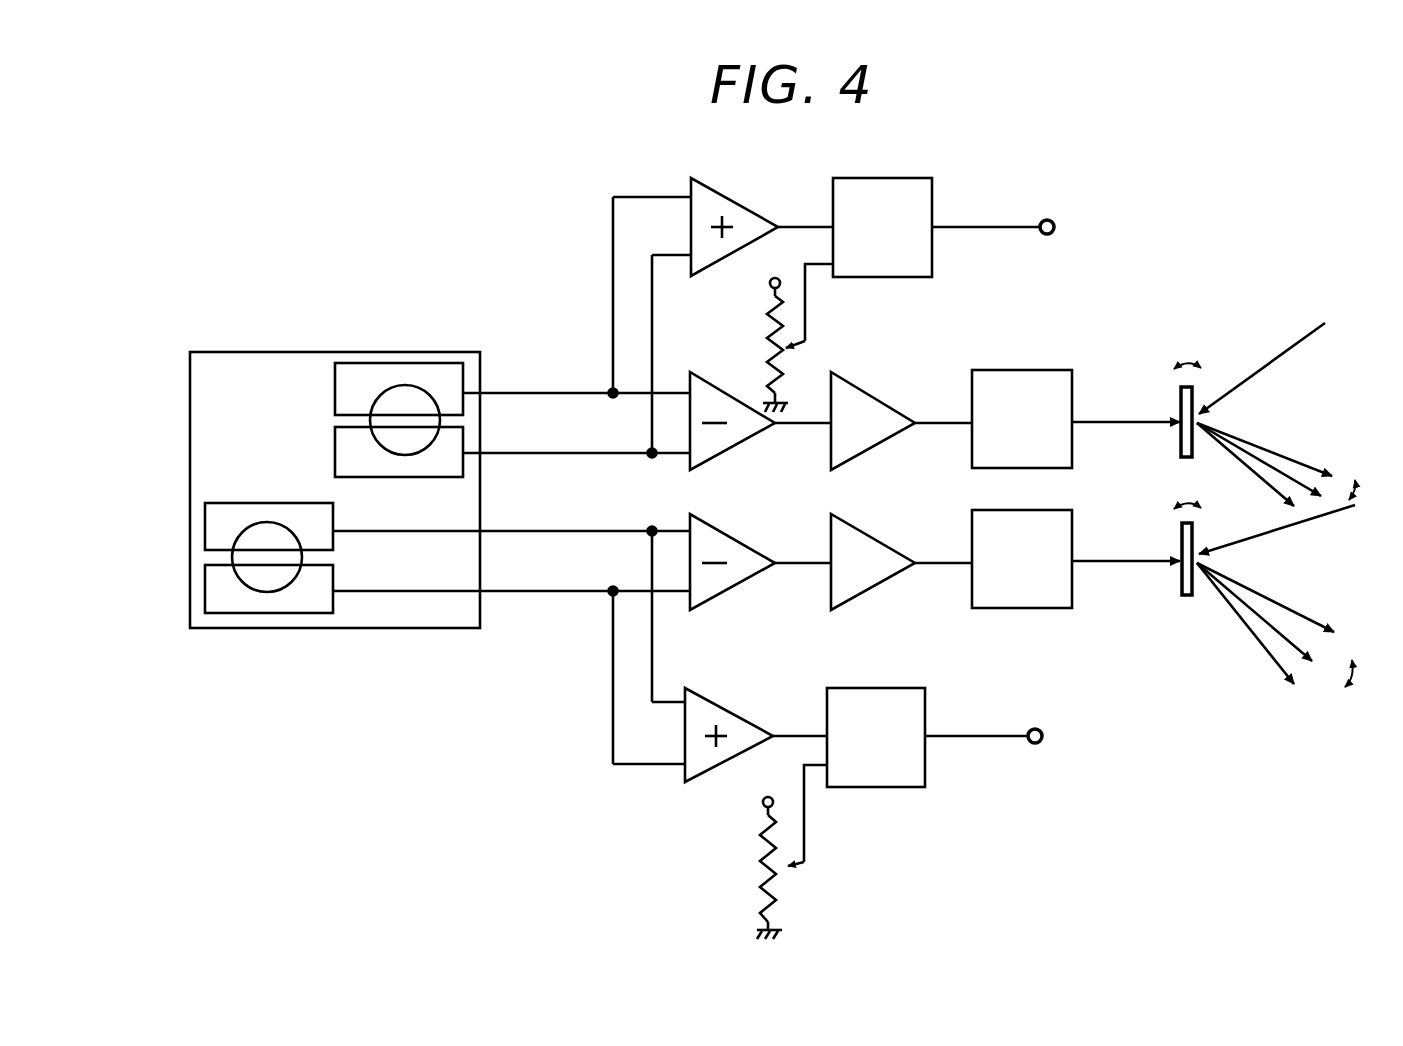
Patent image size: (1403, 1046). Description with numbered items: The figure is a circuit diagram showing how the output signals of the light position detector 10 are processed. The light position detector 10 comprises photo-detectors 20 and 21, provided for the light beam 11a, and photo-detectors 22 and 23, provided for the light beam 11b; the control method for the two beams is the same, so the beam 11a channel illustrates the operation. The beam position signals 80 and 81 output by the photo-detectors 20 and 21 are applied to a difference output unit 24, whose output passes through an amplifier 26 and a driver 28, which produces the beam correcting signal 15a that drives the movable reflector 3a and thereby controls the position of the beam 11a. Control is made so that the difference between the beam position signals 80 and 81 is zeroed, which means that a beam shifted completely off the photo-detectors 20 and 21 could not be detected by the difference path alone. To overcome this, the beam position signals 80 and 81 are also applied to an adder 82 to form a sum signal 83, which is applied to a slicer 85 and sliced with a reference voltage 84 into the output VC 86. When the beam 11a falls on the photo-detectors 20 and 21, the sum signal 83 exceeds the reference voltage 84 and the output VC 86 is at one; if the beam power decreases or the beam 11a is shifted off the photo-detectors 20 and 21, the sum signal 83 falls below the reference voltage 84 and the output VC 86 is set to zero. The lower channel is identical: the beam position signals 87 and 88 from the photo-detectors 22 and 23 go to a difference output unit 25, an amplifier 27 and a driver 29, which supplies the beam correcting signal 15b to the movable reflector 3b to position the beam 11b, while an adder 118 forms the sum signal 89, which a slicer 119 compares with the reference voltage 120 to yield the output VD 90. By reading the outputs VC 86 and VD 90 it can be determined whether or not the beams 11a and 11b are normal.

The light position detector 10 is at (237, 352).
The photo-detector 20 is at (352, 363).
The photo-detector 21 is at (335, 458).
The photo-detector 22 is at (205, 516).
The photo-detector 23 is at (205, 588).
The light beam 11a is at (410, 385).
The light beam 11b is at (267, 592).
The beam position signal 80 is at (570, 393).
The beam position signal 81 is at (518, 453).
The beam position signal 87 is at (566, 531).
The beam position signal 88 is at (516, 591).
The adder 82 is at (722, 192).
The sum signal 83 is at (800, 222).
The slicer 85 is at (850, 178).
The output VC 86 is at (1058, 212).
The reference voltage 84 is at (805, 312).
The difference output unit 24 is at (750, 440).
The amplifier 26 is at (897, 442).
The driver 28 is at (991, 370).
The beam correcting signal 15a is at (1108, 420).
The movable reflector 3a is at (1180, 395).
The difference output unit 25 is at (735, 585).
The amplifier 27 is at (897, 582).
The driver 29 is at (990, 608).
The beam correcting signal 15b is at (1108, 566).
The movable reflector 3b is at (1183, 597).
The adder 118 is at (702, 776).
The sum signal 89 is at (797, 733).
The slicer 119 is at (878, 688).
The output VD 90 is at (1045, 750).
The reference voltage 120 is at (804, 848).